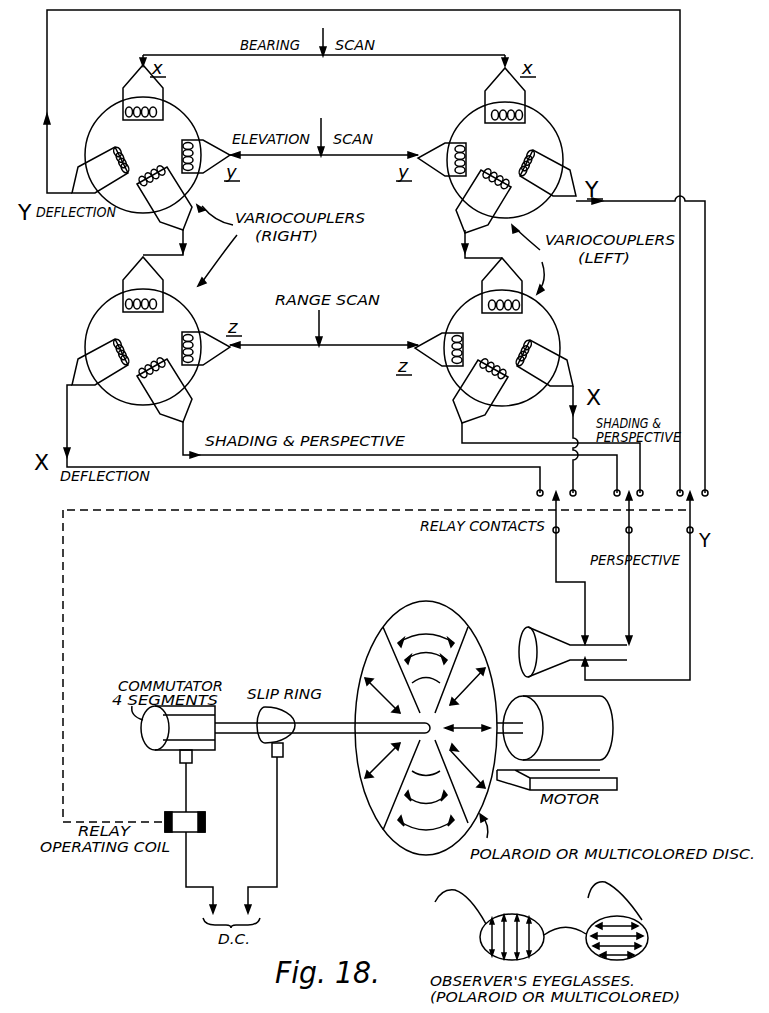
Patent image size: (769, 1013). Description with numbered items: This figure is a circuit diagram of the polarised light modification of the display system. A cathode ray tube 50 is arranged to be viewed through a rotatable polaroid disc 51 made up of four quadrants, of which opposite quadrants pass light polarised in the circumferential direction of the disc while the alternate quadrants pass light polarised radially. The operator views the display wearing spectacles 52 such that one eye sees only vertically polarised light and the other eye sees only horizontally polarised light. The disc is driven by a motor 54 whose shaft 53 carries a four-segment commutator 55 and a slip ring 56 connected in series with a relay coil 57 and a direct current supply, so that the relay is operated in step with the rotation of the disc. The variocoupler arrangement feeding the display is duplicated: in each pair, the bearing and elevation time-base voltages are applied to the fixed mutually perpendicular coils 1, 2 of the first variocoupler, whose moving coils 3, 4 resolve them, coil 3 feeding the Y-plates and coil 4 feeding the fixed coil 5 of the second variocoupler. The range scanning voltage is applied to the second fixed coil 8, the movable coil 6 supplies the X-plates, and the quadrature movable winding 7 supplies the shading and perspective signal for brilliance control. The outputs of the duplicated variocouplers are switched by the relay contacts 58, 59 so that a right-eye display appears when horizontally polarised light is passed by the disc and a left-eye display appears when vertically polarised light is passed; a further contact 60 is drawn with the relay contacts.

The fixed coil 1 is at (123, 118).
The fixed coil 2 is at (182, 149).
The moving coil 3 is at (114, 161).
The moving coil 4 is at (156, 177).
The fixed coil 5 is at (123, 310).
The movable coil 6 is at (114, 351).
The second movable winding 7 is at (156, 369).
The second fixed coil 8 is at (182, 340).
The cathode ray tube 50 is at (525, 635).
The rotatable polaroid disc 51 is at (395, 833).
The spectacles 52 is at (546, 926).
The shaft 53 is at (318, 735).
The motor 54 is at (612, 733).
The four-segment commutator 55 is at (146, 740).
The slip ring 56 is at (262, 745).
The relay coil 57 is at (172, 812).
The relay contact 58 is at (557, 505).
The relay contact 59 is at (627, 505).
The relay contact 60 is at (692, 505).